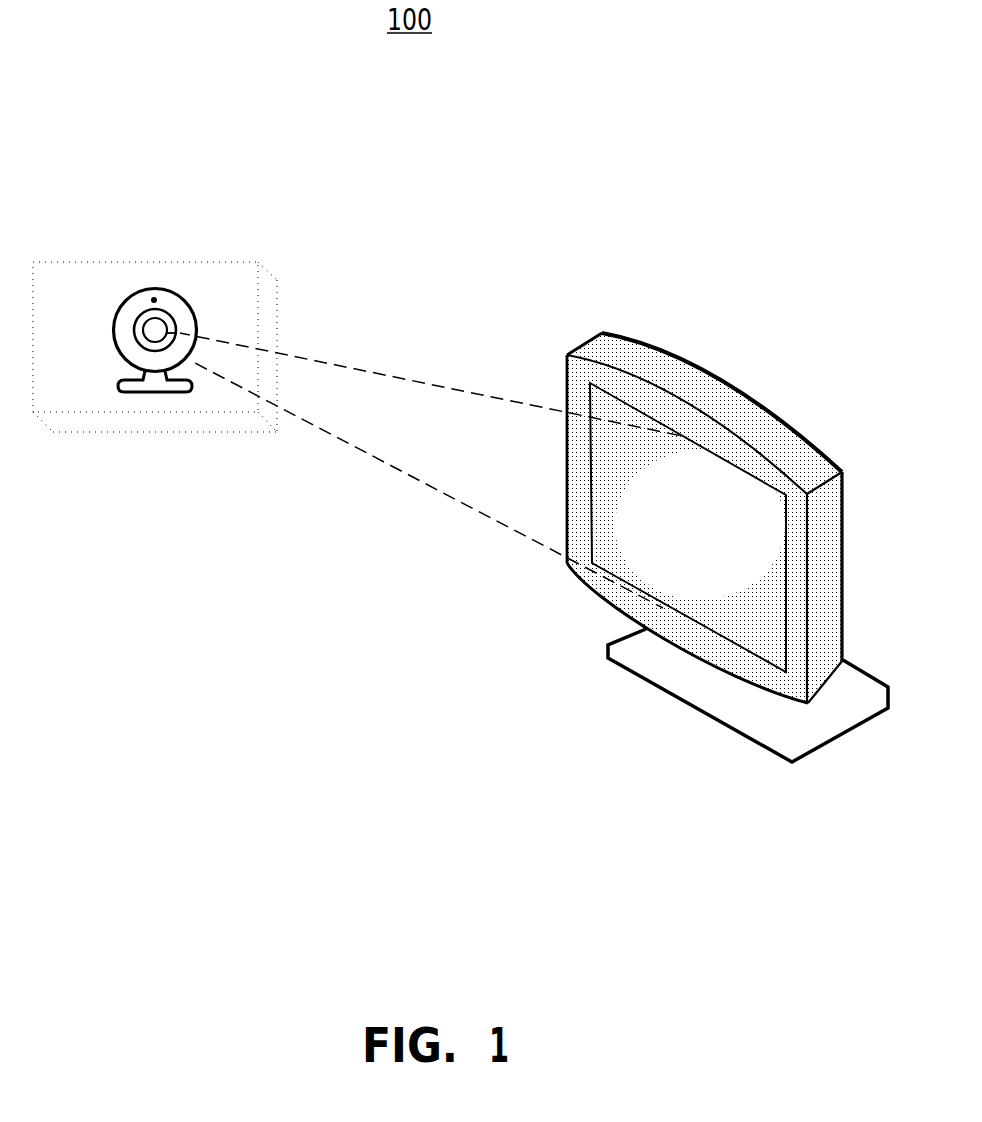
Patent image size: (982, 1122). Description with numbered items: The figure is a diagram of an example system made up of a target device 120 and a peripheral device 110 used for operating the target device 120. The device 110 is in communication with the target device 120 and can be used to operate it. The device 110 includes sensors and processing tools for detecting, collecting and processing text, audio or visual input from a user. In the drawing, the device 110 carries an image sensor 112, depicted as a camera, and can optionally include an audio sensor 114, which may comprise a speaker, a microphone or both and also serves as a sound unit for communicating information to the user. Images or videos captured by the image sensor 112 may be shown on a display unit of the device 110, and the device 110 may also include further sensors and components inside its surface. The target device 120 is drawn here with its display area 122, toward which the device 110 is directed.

The device 110 is at (97, 263).
The image sensor 112 is at (172, 315).
The audio sensor 114 is at (156, 289).
The target device 120 is at (685, 368).
The display screen 122 is at (707, 477).